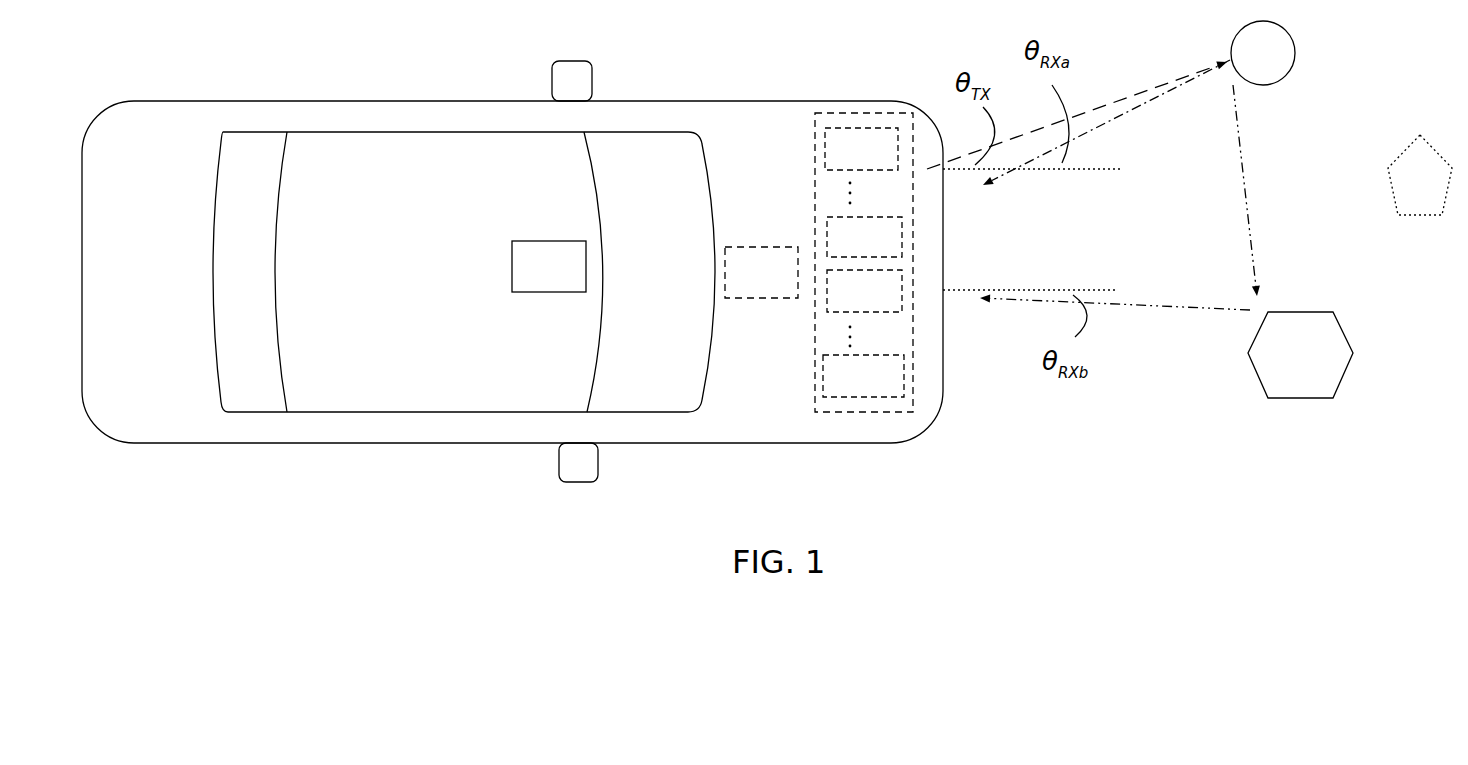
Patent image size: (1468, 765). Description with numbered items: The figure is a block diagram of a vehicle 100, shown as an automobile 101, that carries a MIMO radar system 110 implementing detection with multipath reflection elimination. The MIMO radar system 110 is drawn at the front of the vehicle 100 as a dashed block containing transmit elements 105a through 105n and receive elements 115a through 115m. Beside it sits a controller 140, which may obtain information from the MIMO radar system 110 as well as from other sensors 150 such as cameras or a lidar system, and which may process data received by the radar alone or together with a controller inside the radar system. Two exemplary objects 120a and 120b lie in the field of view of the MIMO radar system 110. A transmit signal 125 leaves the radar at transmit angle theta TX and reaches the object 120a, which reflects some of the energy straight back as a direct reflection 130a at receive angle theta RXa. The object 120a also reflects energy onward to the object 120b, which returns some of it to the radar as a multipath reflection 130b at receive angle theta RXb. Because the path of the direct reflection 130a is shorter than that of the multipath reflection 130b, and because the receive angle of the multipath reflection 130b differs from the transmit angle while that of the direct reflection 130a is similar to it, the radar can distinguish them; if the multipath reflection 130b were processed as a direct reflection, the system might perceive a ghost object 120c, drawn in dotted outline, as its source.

The vehicle 100 is at (512, 258).
The automobile 101 is at (248, 102).
The MIMO radar system 110 is at (807, 231).
The transmit element 105a is at (838, 160).
The transmit element 105n is at (841, 248).
The receive element 115a is at (841, 302).
The receive element 115m is at (838, 387).
The controller 140 is at (784, 293).
The other sensors 150 is at (528, 287).
The object 120a is at (1286, 64).
The object 120b is at (1276, 366).
The ghost object 120c is at (1399, 186).
The transmit signal 125 is at (1182, 80).
The direct reflection 130a is at (1127, 118).
The multipath reflection 130b is at (1192, 312).